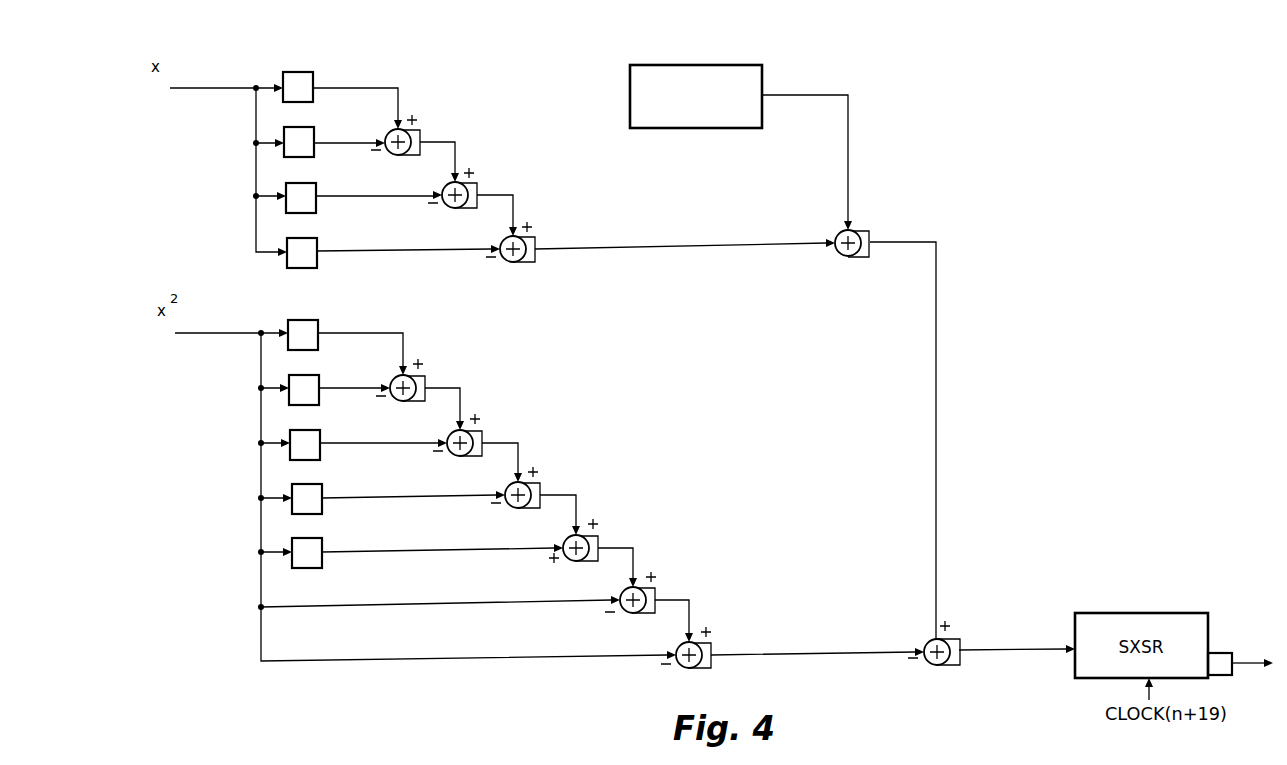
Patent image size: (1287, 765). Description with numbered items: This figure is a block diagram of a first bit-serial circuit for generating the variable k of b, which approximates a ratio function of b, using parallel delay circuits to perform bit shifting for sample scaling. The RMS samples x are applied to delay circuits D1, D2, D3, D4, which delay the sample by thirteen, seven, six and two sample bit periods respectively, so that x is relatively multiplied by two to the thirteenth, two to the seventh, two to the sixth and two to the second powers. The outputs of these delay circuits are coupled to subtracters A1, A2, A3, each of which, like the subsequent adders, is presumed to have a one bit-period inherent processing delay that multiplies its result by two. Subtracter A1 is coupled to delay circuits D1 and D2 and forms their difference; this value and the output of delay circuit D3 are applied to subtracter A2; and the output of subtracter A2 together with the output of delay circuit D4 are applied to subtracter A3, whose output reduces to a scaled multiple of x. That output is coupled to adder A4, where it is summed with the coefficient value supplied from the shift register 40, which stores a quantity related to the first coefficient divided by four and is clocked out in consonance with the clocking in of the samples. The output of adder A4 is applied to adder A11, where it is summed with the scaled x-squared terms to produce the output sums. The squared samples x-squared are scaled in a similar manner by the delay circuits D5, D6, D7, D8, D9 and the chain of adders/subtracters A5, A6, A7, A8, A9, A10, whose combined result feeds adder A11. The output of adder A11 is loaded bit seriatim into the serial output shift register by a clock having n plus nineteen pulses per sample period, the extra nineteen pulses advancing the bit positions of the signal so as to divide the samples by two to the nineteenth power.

The delay circuit D1 is at (313, 72).
The delay circuit D2 is at (314, 127).
The delay circuit D3 is at (316, 183).
The delay circuit D4 is at (317, 238).
The delay circuit D5 is at (318, 320).
The delay circuit D6 is at (319, 375).
The delay circuit D7 is at (320, 430).
The delay circuit D8 is at (322, 484).
The delay circuit D9 is at (322, 538).
The subtracter A1 is at (401, 155).
The subtracter A2 is at (458, 208).
The subtracter A3 is at (516, 262).
The adder A4 is at (851, 256).
The adder/subtracter A5 is at (406, 401).
The adder/subtracter A6 is at (463, 456).
The adder/subtracter A7 is at (521, 508).
The adder/subtracter A8 is at (579, 561).
The adder/subtracter A9 is at (636, 613).
The adder/subtracter A10 is at (692, 668).
The adder A11 is at (940, 665).
The register 40 is at (710, 128).